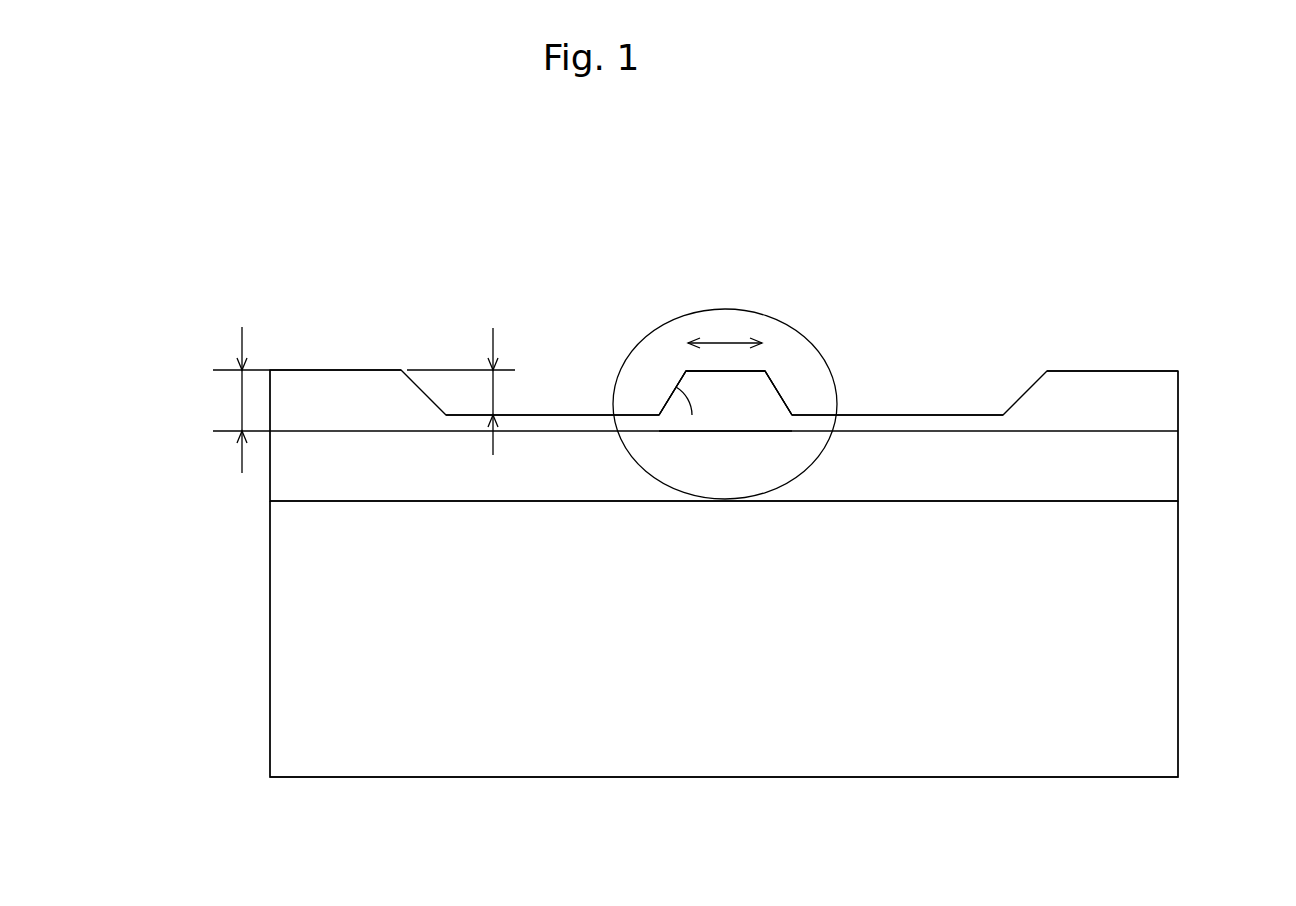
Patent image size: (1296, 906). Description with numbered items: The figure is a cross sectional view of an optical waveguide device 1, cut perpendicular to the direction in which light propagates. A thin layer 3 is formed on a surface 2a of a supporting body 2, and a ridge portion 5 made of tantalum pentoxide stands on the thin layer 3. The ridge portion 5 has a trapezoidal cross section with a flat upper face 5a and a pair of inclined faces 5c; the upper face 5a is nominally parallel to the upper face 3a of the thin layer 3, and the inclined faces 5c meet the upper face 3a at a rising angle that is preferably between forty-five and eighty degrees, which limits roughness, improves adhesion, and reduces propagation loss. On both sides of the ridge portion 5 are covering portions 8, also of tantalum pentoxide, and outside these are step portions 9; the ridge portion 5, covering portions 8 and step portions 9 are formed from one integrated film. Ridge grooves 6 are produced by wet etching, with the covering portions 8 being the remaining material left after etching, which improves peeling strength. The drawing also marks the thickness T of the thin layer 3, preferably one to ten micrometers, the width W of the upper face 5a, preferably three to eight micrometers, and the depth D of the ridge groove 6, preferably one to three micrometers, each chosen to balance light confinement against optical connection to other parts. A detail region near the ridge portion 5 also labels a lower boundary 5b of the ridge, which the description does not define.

The optical waveguide device 1 is at (1202, 297).
The supporting body 2 is at (1155, 658).
The surface of supporting body 2a is at (918, 501).
The thin layer 3 is at (1153, 470).
The upper face of thin layer 3a is at (1072, 431).
The ridge portion 5 is at (790, 372).
The upper face of ridge portion 5a is at (700, 371).
The bottom of protrusion 5b is at (770, 433).
The inclined face 5c is at (678, 388).
The ridge groove 6 is at (1027, 343).
The covering portion 8 is at (940, 422).
The step portion 9 is at (1092, 385).
The thickness of thin layer T is at (240, 408).
The depth of ridge groove D is at (493, 400).
The width of upper face W is at (725, 343).